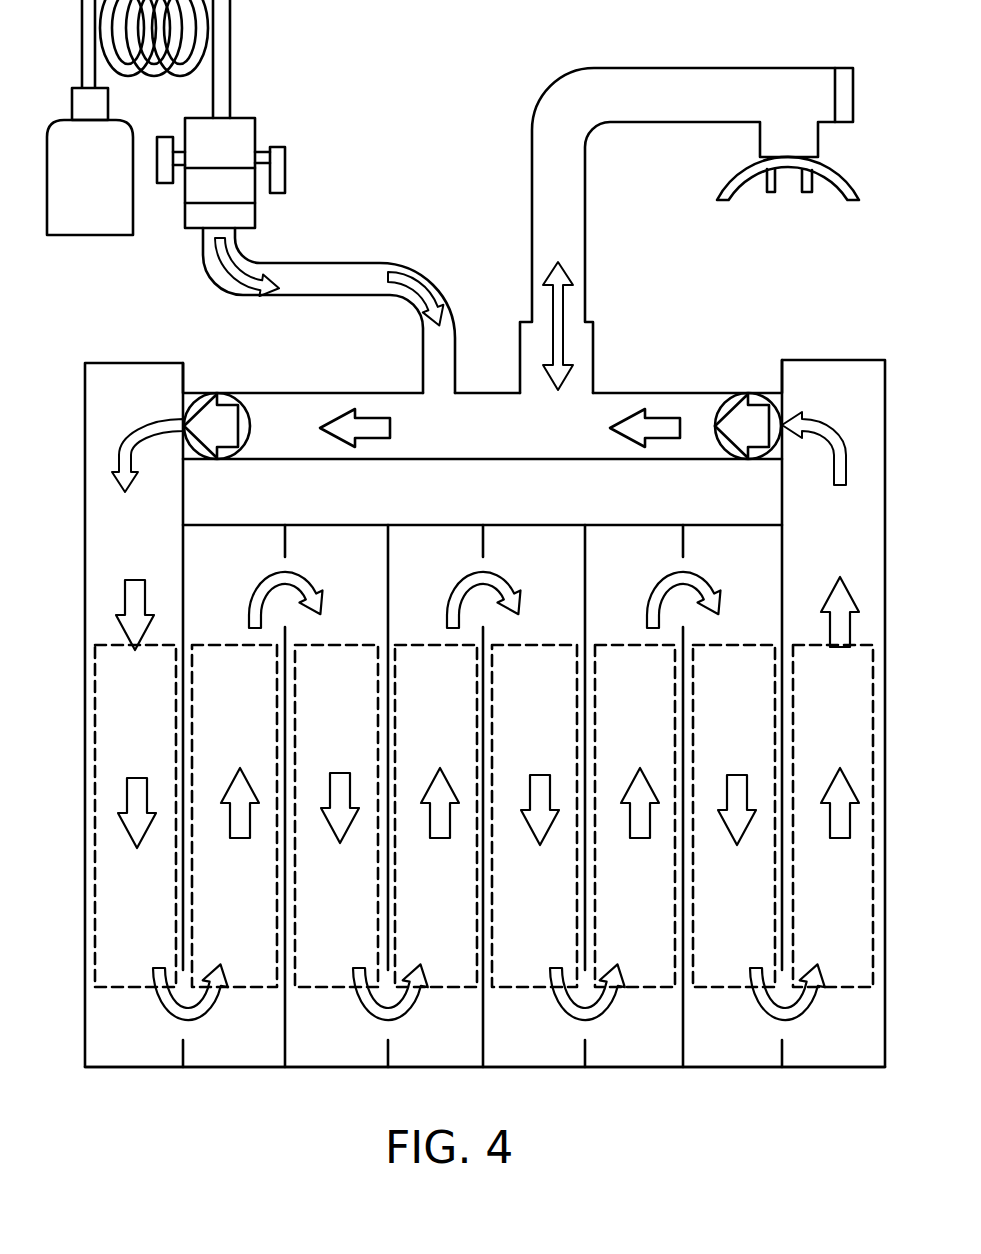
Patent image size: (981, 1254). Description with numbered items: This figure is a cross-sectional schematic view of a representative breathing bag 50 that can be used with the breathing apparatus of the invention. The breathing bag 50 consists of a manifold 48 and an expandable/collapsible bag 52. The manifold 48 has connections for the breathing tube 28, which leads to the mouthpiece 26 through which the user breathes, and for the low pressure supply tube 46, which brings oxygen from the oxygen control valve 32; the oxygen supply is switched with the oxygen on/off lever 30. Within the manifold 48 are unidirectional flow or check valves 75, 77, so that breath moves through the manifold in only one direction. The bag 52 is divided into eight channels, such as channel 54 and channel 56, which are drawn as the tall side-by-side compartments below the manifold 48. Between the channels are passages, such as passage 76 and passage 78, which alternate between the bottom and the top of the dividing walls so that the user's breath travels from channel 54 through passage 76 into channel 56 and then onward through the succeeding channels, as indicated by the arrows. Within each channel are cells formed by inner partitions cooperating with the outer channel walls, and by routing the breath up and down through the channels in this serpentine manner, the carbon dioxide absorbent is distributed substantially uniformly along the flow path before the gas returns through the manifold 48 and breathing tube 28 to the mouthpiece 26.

The mouthpiece 26 is at (841, 170).
The breathing tube 28 is at (536, 120).
The oxygen on/off lever 30 is at (288, 156).
The oxygen control valve 32 is at (184, 194).
The low pressure supply tube 46 is at (380, 262).
The breathing bag manifold 48 is at (640, 392).
The breathing bag 50 is at (460, 719).
The expandable/collapsible bag 52 is at (392, 1070).
The channel 54 is at (108, 642).
The channel 56 is at (232, 722).
The check valve 75 is at (250, 417).
The passage 76 is at (186, 1028).
The check valve 77 is at (732, 393).
The passage 78 is at (282, 563).